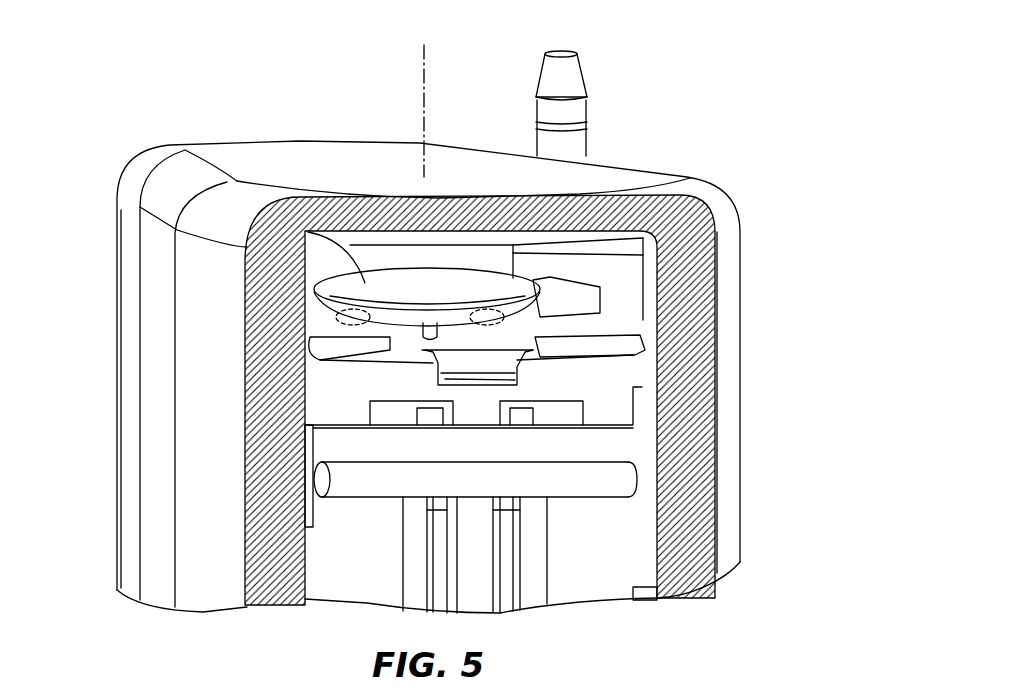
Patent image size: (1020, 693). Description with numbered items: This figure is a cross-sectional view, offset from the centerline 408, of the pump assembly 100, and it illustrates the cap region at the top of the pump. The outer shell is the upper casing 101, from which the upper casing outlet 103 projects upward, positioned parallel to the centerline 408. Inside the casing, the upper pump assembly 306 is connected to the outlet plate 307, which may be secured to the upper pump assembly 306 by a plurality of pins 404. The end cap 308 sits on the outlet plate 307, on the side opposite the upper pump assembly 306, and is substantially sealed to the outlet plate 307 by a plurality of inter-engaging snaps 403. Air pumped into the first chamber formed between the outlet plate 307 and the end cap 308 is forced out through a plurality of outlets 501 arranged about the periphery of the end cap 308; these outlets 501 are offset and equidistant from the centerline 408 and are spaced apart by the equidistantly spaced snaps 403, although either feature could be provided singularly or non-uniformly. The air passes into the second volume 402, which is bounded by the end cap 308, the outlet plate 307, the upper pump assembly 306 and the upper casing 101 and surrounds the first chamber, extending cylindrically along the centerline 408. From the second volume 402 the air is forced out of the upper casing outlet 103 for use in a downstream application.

The pump assembly 100 is at (207, 98).
The upper casing 101 is at (183, 473).
The upper casing outlet 103 is at (577, 67).
The upper pump assembly 306 is at (573, 443).
The outlet plate 307 is at (343, 380).
The end cap 308 is at (325, 240).
The second volume 402 is at (548, 263).
The snaps 403 is at (610, 345).
The pins 404 is at (495, 392).
The centerline 408 is at (420, 103).
The outlets 501 is at (340, 298).